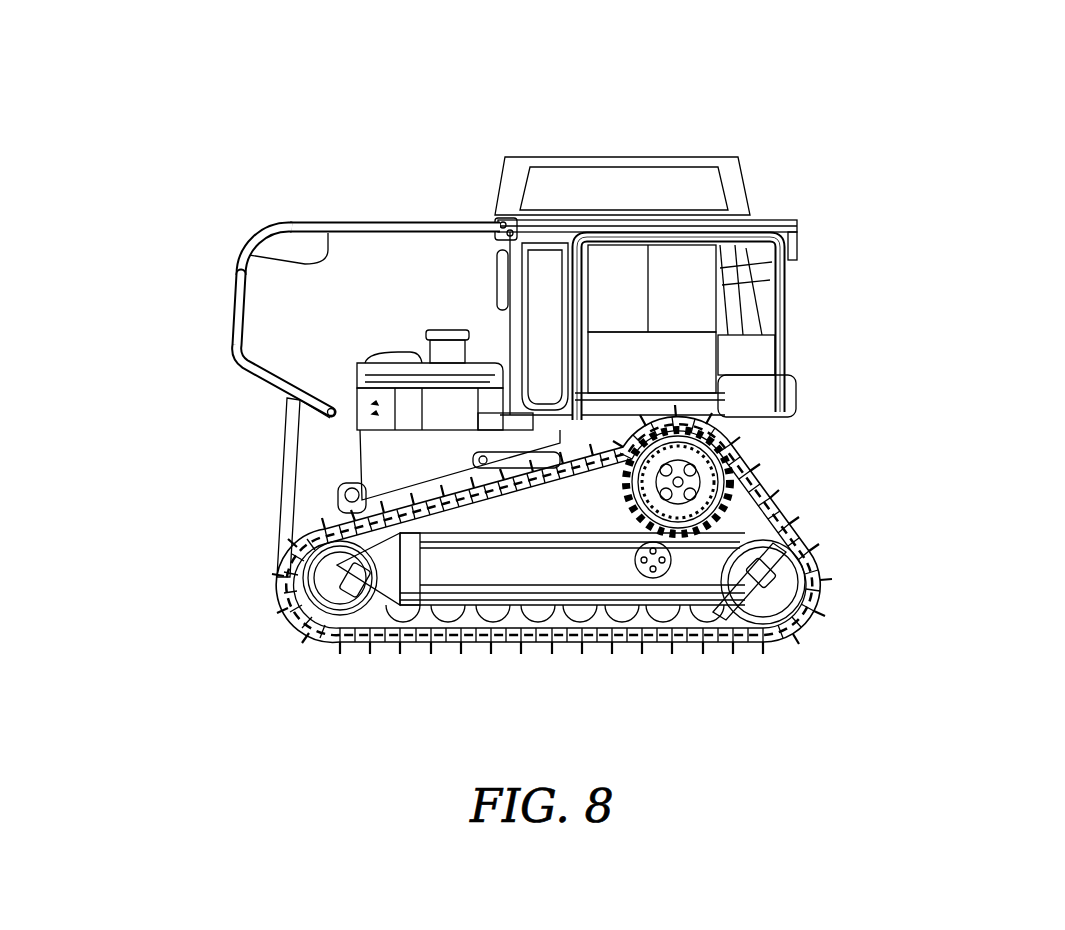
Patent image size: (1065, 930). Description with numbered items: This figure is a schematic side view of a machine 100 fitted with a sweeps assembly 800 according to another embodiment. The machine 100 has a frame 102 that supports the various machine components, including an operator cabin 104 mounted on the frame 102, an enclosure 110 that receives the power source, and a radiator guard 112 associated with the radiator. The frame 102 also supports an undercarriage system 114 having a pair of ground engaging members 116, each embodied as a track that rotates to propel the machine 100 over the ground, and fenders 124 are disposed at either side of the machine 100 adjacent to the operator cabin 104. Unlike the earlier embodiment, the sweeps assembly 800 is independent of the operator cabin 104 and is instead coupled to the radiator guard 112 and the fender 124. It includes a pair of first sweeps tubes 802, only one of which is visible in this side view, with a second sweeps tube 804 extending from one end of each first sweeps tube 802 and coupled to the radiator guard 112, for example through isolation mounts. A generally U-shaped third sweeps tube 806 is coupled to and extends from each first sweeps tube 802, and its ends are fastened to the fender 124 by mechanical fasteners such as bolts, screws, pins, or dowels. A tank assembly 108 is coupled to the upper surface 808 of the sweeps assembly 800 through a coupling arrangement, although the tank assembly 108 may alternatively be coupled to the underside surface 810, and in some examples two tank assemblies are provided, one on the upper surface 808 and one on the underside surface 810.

The machine 100 is at (967, 114).
The frame 102 is at (528, 445).
The operator cabin 104 is at (666, 282).
The tank assembly 108 is at (684, 138).
The enclosure 110 is at (392, 438).
The radiator guard 112 is at (280, 463).
The undercarriage system 114 is at (276, 585).
The ground engaging members 116 is at (645, 655).
The fender 124 is at (620, 362).
The sweeps assembly 800 is at (421, 202).
The first sweeps tube 802 is at (455, 222).
The second sweeps tube 804 is at (236, 292).
The third sweeps tube 806 is at (785, 322).
The upper surface 808 is at (326, 222).
The underside surface 810 is at (243, 254).